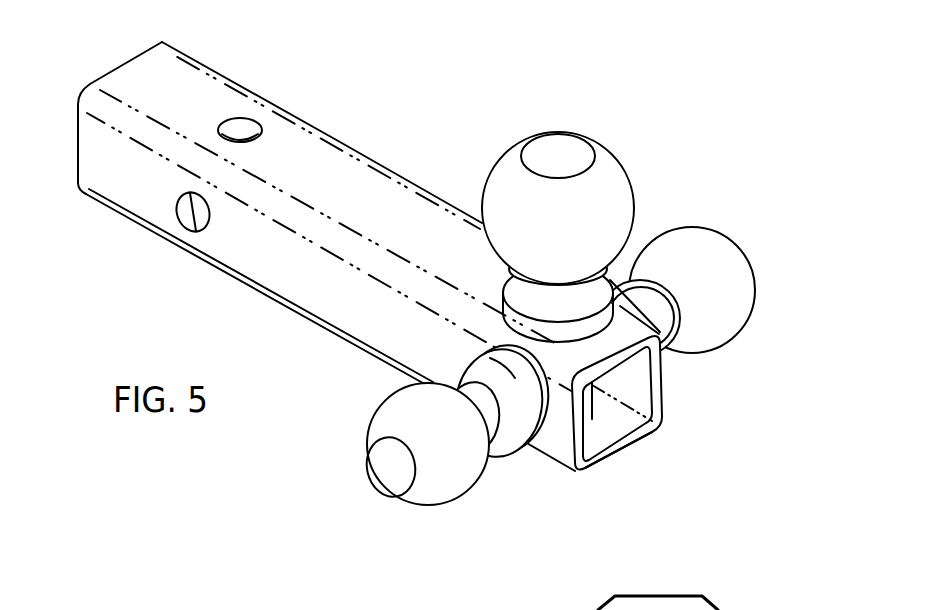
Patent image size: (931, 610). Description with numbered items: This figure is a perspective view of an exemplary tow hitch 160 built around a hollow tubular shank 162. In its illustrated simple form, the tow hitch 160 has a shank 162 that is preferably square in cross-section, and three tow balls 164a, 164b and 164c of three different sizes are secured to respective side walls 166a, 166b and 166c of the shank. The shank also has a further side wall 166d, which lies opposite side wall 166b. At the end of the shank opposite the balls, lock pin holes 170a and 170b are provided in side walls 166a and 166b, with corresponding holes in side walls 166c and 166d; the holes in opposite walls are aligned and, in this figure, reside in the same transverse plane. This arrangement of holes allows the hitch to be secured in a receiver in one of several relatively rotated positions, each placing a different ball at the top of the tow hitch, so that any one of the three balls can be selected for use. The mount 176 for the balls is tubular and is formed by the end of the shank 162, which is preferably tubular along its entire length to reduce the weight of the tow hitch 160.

The tow hitch 160 is at (478, 97).
The tubular shank 162 is at (350, 153).
The tow ball 164a is at (443, 488).
The tow ball 164b is at (568, 148).
The tow ball 164c is at (697, 250).
The side wall 166a is at (367, 323).
The side wall 166b is at (403, 207).
The side wall 166c is at (658, 385).
The side wall 166d is at (628, 452).
The lock pin hole 170a is at (188, 218).
The lock pin hole 170b is at (243, 125).
The tubular mount 176 is at (545, 475).